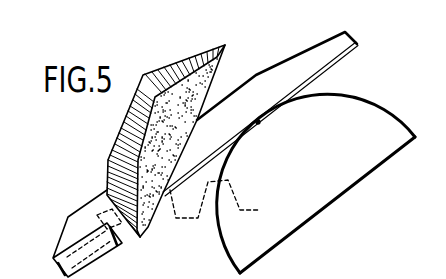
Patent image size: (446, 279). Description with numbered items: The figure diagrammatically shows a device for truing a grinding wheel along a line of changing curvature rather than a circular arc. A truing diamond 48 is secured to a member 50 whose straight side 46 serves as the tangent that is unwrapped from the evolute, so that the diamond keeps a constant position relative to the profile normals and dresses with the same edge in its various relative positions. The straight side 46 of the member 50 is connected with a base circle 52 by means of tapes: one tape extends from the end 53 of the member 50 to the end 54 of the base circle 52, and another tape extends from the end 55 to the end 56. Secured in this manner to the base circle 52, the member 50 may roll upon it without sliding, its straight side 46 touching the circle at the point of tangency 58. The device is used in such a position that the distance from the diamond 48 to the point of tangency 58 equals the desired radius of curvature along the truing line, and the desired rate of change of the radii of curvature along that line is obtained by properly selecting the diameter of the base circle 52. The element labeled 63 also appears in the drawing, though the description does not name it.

The straight side 46 is at (167, 187).
The diamond 48 is at (123, 230).
The member 50 is at (97, 205).
The base circle 52 is at (341, 93).
The end of member 53 is at (58, 267).
The end of base circle 54 is at (417, 139).
The end 55 is at (356, 43).
The end 56 is at (243, 273).
The point of tangency 58 is at (260, 123).
The base 63 is at (338, 277).